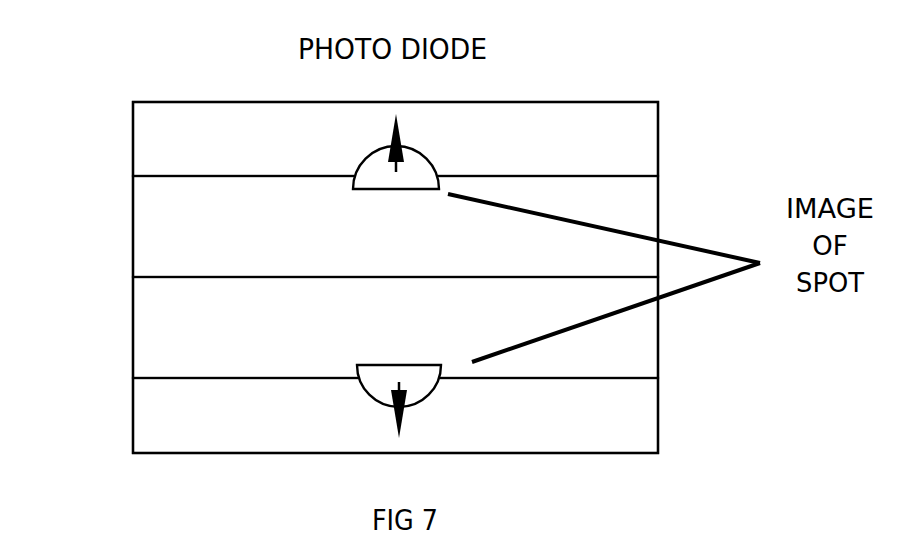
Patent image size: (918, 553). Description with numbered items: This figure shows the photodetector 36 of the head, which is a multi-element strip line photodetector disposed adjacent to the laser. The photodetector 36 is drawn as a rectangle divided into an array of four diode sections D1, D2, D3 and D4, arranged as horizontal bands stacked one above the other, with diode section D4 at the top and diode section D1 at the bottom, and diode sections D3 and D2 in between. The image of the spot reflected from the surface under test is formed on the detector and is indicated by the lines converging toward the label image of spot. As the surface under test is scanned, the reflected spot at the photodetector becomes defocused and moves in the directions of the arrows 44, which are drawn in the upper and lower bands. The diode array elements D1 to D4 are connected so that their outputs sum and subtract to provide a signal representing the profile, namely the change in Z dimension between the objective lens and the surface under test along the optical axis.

The photodetector 36 is at (523, 100).
The arrows 44 is at (420, 152).
The diode section D1 is at (658, 429).
The diode section D2 is at (133, 327).
The diode section D3 is at (133, 228).
The diode section D4 is at (658, 122).